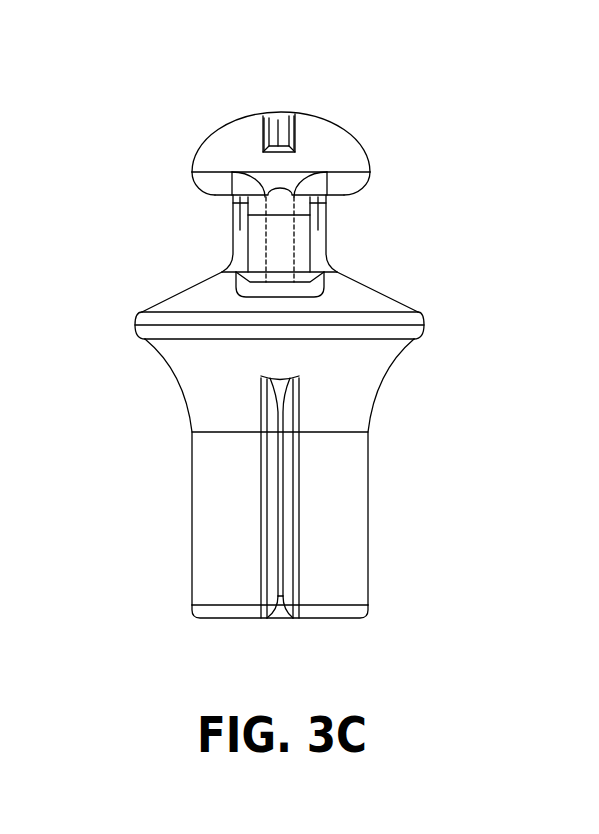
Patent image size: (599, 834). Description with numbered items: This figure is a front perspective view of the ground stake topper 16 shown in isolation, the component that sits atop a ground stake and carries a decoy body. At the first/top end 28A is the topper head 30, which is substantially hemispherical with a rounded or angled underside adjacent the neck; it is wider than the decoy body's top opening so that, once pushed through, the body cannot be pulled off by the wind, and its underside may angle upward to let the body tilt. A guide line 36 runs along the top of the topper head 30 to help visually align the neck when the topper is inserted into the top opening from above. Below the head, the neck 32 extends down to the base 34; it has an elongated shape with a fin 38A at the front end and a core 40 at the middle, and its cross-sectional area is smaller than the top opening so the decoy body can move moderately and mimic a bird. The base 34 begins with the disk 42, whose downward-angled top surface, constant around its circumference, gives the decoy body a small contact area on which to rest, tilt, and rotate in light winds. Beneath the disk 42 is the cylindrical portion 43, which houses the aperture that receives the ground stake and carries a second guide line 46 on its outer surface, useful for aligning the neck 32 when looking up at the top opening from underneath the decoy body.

The ground stake topper 16 is at (122, 111).
The topper head 30 is at (328, 157).
The guide line 36 is at (262, 132).
The first/top end 28A is at (297, 110).
The guide line 46 is at (284, 517).
The neck 32 is at (260, 240).
The fin 38A is at (288, 232).
The core 40 is at (232, 248).
The disk 42 is at (355, 302).
The base 34 is at (181, 528).
The cylindrical portion 43 is at (355, 506).